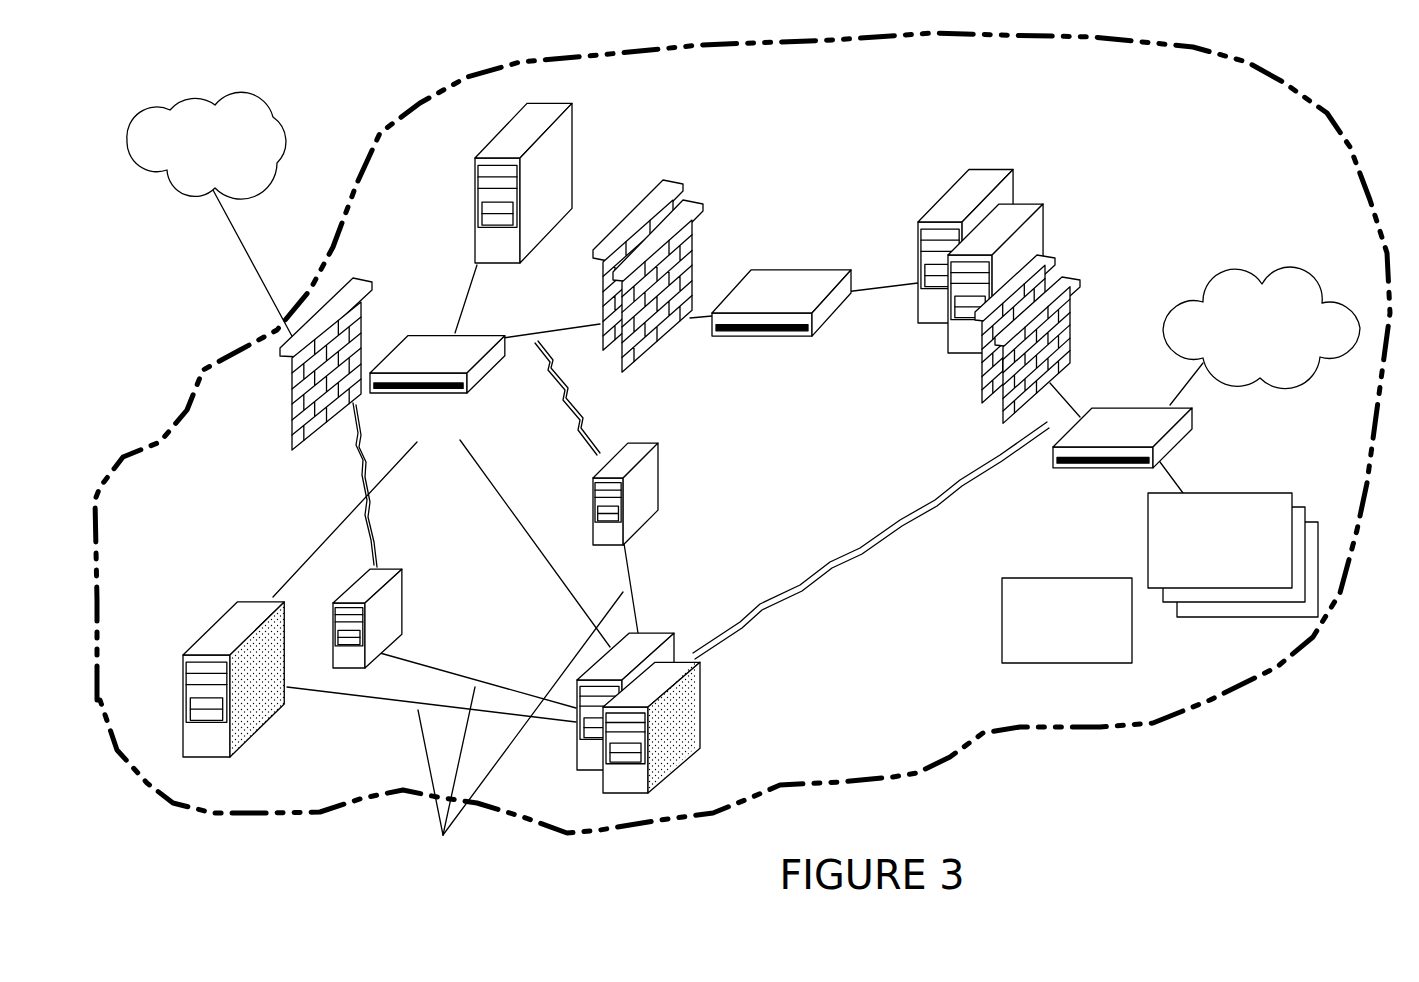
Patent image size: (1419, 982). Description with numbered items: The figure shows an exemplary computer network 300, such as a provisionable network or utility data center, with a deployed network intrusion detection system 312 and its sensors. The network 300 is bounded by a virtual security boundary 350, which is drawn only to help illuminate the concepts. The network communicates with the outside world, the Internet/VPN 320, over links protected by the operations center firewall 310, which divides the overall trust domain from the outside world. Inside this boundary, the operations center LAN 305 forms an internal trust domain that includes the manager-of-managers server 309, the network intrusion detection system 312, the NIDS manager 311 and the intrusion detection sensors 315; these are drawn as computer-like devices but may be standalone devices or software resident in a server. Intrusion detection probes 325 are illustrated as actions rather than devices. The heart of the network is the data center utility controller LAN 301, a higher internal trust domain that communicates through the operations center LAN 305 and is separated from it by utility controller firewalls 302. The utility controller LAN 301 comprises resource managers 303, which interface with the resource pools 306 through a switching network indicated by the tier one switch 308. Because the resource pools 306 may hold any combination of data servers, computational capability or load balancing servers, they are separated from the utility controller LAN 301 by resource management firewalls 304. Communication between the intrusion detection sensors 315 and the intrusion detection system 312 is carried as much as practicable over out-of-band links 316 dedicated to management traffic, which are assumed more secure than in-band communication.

The network 300 is at (1067, 620).
The data center utility controller LAN 301 is at (805, 342).
The utility controller firewalls 302 is at (757, 249).
The resource managers 303 is at (1063, 219).
The resource management firewalls 304 is at (1134, 310).
The operations center LAN 305 is at (442, 392).
The resource pools 306 is at (1254, 442).
The tier 1 switch 308 is at (1106, 462).
The manager-of-managers server 309 is at (669, 174).
The operations center firewall 310 is at (247, 406).
The NIDS manager 311 is at (285, 679).
The network intrusion detection system 312 is at (660, 713).
The intrusion detection sensors 315 is at (644, 572).
The out-of-band links 316 is at (443, 835).
The Internet/VPN 320 is at (206, 145).
The intrusion detection probes 325 is at (701, 500).
The virtual security boundary 350 is at (742, 433).